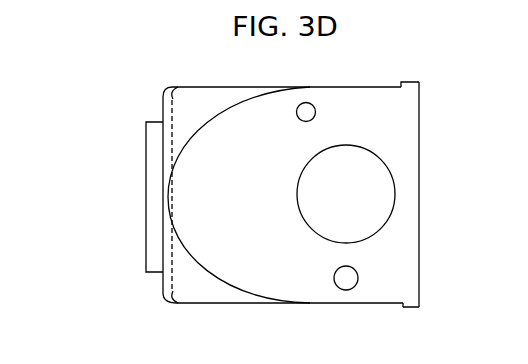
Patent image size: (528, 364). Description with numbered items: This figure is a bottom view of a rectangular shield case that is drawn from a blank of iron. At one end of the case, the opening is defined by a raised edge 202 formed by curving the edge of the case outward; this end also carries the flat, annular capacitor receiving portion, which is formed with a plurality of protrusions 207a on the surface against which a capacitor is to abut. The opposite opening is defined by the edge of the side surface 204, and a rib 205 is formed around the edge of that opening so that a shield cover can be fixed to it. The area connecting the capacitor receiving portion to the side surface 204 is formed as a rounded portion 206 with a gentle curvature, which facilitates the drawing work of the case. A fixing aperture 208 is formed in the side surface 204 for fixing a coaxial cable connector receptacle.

The raised edge 202 is at (160, 150).
The side surface 204 is at (365, 93).
The rib 205 is at (412, 81).
The rounded portion 206 is at (202, 103).
The protrusions 207a is at (178, 88).
The fixing aperture 208 is at (352, 158).